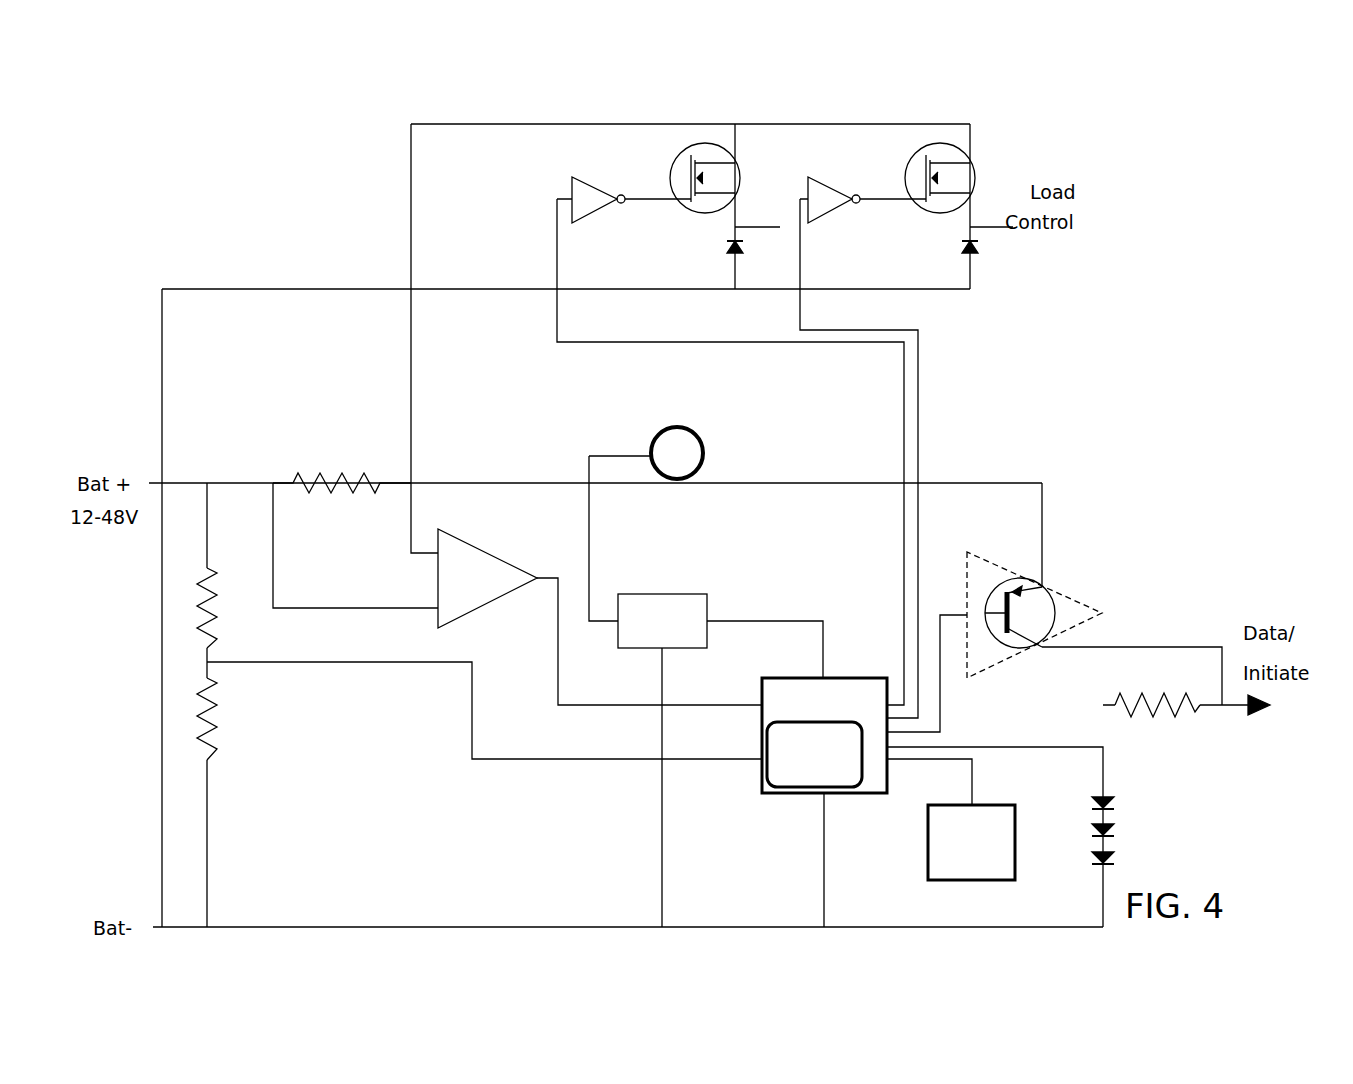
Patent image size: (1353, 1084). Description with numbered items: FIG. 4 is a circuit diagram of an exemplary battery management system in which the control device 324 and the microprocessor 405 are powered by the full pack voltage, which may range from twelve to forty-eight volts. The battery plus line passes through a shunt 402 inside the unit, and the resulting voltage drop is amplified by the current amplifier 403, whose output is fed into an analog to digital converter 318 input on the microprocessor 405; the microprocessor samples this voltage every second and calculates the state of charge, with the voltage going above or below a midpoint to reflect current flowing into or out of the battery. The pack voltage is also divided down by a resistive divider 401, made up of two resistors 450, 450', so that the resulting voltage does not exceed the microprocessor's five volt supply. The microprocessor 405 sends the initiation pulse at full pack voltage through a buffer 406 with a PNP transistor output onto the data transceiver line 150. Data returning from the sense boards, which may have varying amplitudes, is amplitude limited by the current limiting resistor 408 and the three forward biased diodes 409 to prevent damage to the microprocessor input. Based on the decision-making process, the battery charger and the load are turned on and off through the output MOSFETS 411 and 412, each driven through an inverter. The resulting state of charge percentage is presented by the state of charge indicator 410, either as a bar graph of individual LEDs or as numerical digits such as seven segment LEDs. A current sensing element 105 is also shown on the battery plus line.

The current sensor 105 is at (683, 462).
The data transceiver line 150 is at (1262, 712).
The analog to digital converter 318 is at (787, 772).
The control device 324 is at (838, 778).
The resistive divider 401 is at (234, 675).
The shunt 402 is at (322, 478).
The current amplifier 403 is at (487, 573).
The microprocessor 405 is at (838, 678).
The buffer 406 is at (1065, 612).
The current limiting resistor 408 is at (1195, 710).
The forward biased diodes 409 is at (1112, 857).
The state of charge indicator 410 is at (1010, 835).
The output MOSFET 411 is at (715, 157).
The output MOSFET 412 is at (938, 153).
The resistor 450 is at (262, 608).
The resistor 450' is at (267, 728).